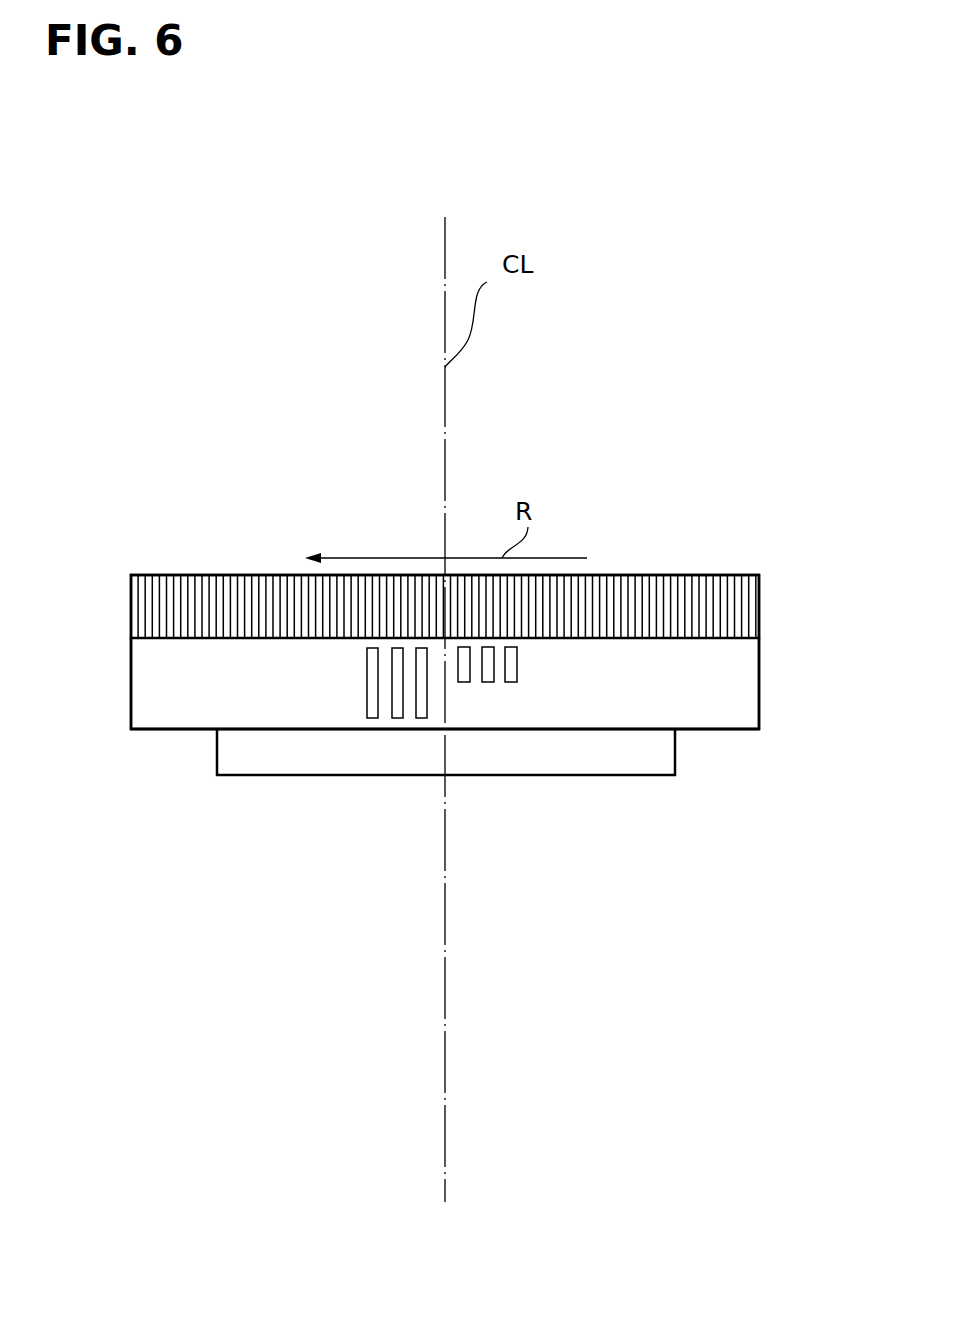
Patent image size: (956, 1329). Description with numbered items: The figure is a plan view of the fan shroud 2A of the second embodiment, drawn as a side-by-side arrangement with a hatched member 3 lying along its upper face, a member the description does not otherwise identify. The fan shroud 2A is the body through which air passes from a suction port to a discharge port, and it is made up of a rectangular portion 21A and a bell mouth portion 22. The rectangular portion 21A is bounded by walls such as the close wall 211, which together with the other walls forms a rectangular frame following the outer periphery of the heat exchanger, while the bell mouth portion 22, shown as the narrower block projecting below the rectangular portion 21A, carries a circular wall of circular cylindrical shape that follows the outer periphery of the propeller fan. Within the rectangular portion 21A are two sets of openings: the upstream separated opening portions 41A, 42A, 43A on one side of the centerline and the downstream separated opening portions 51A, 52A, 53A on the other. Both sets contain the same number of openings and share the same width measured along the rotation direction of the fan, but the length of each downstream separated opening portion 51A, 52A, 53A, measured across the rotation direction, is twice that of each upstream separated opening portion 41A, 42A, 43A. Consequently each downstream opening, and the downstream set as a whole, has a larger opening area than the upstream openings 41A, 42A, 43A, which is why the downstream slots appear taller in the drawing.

The medium (recording medium) 3 is at (685, 574).
The fan shroud 2A is at (777, 668).
The rectangular portion 21A is at (774, 712).
The close wall 211 is at (715, 703).
The bell mouth portion 22 is at (689, 770).
The upstream separated opening portion 41A is at (511, 682).
The upstream separated opening portion 42A is at (488, 682).
The upstream separated opening portion 43A is at (464, 682).
The downstream separated opening portion 51A is at (422, 718).
The downstream separated opening portion 52A is at (398, 718).
The downstream separated opening portion 53A is at (373, 718).